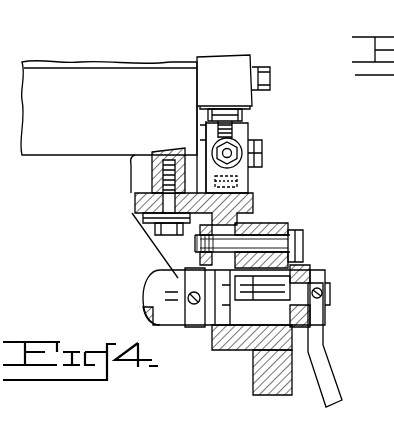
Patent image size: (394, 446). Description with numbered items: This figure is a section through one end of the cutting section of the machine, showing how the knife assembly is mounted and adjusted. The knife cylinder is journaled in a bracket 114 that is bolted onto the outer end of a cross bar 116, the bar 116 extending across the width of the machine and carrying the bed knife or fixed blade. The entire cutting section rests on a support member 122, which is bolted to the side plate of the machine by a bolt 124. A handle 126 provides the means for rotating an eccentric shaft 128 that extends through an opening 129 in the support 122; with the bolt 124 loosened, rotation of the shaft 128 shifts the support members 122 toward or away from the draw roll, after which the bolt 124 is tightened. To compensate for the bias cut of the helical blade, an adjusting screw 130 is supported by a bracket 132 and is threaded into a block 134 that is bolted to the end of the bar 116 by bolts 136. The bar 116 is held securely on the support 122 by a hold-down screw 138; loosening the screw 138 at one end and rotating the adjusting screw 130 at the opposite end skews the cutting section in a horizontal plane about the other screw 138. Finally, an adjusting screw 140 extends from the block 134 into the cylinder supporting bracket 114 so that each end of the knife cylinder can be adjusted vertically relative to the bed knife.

The bracket 114 is at (236, 57).
The cross bar 116 is at (102, 107).
The support member 122 is at (255, 203).
The bolt 124 is at (303, 238).
The handle 126 is at (337, 381).
The eccentric shaft 128 is at (145, 282).
The opening 129 is at (195, 265).
The adjusting screw 130 is at (214, 150).
The bracket 132 is at (250, 178).
The block 134 is at (203, 122).
The bolt 136 is at (262, 150).
The screw 138 is at (153, 228).
The adjusting screw 140 is at (247, 121).